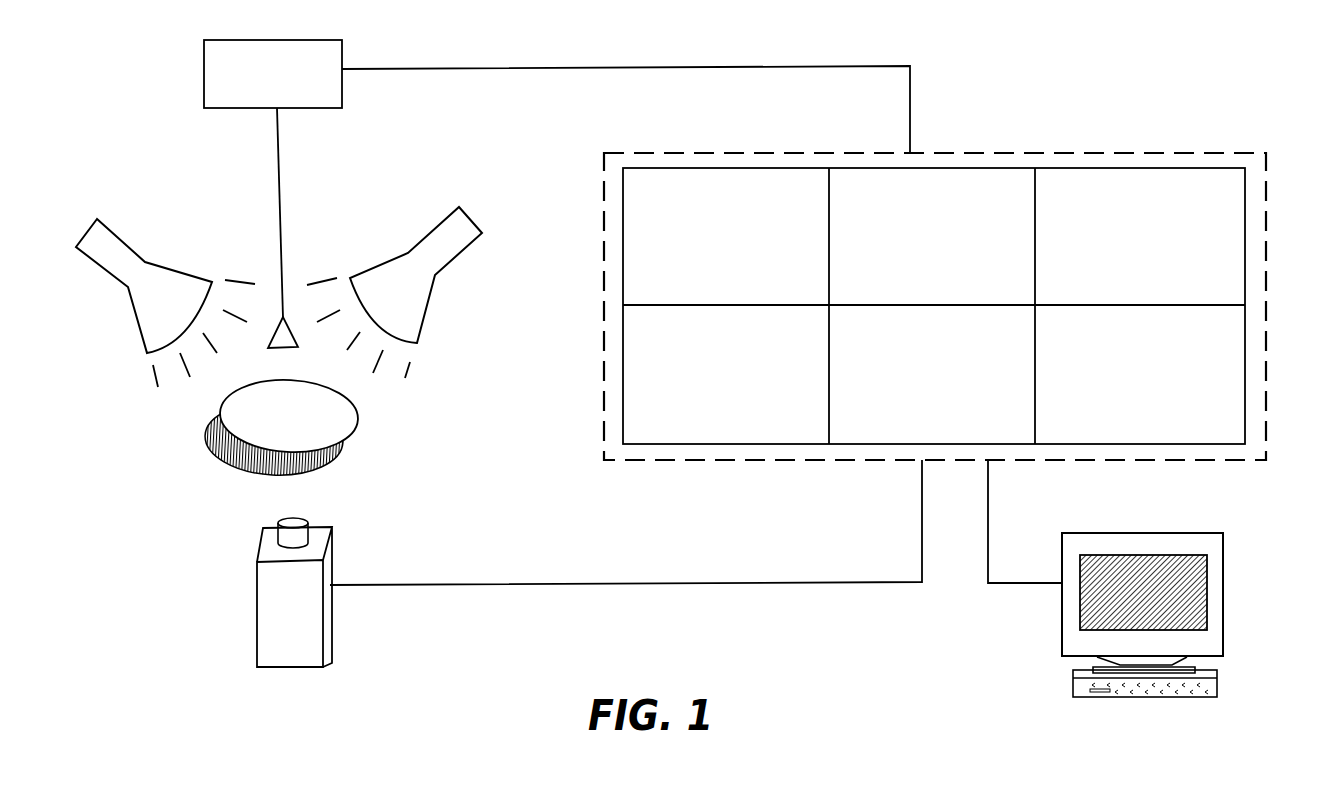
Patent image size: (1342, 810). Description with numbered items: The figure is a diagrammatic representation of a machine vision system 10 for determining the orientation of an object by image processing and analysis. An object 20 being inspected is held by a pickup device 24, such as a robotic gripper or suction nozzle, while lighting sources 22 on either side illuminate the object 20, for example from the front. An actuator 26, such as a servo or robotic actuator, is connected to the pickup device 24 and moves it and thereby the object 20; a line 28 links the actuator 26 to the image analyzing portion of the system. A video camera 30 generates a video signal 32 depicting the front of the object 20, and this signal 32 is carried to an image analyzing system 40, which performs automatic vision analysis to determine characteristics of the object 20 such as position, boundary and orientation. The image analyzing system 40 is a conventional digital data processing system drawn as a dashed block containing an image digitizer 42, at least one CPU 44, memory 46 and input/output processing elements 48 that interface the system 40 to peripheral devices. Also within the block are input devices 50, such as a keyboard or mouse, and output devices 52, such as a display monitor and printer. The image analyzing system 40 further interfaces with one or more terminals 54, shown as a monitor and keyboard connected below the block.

The machine vision system 10 is at (1122, 93).
The object 20 is at (330, 417).
The lighting sources 22 is at (143, 303).
The pickup device 24 is at (280, 340).
The actuator 26 is at (310, 90).
The camera signal line 28 is at (590, 66).
The video camera 30 is at (300, 655).
The video signal 32 is at (787, 582).
The image analyzing system 40 is at (935, 345).
The image digitizer 42 is at (808, 295).
The CPU 44 is at (806, 430).
The memory 46 is at (1005, 295).
The input/output processing elements 48 is at (1012, 436).
The input devices 50 is at (1220, 295).
The output devices 52 is at (1219, 435).
The terminals 54 is at (1223, 597).